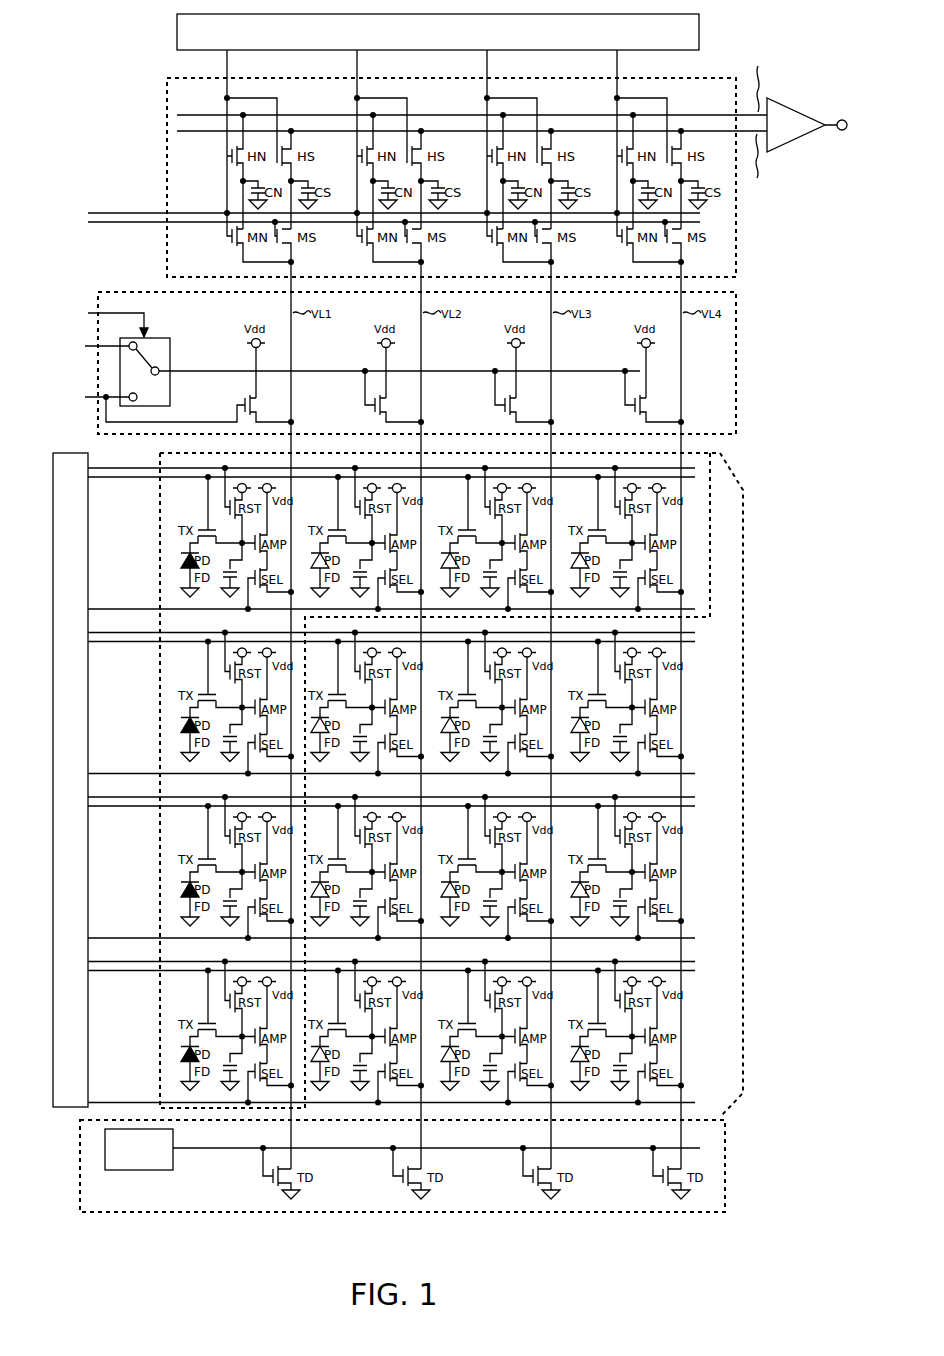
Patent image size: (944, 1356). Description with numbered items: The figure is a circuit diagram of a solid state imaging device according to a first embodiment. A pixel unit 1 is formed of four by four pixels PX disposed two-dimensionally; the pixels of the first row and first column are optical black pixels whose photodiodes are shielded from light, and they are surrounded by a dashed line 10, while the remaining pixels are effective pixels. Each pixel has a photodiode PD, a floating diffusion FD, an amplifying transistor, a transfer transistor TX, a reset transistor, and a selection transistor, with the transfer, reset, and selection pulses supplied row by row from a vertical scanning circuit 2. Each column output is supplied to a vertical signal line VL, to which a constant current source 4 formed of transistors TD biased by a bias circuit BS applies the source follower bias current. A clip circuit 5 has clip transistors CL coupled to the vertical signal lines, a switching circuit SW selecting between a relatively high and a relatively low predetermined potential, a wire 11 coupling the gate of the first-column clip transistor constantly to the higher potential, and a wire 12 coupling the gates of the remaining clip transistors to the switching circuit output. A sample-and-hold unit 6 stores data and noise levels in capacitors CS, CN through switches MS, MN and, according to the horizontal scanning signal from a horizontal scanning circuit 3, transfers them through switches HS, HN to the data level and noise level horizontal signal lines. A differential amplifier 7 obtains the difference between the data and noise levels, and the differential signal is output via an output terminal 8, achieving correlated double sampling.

The pixel unit 1 is at (745, 790).
The vertical scanning circuit 2 is at (66, 1107).
The horizontal scanning circuit 3 is at (699, 33).
The constant current source 4 is at (727, 1168).
The clip circuit 5 is at (407, 363).
The sample-and-hold unit 6 is at (738, 222).
The differential amplifier 7 is at (795, 152).
The output terminal 8 is at (840, 119).
The dashed line 10 is at (703, 621).
The wire 11 is at (205, 420).
The wire 12 is at (205, 370).